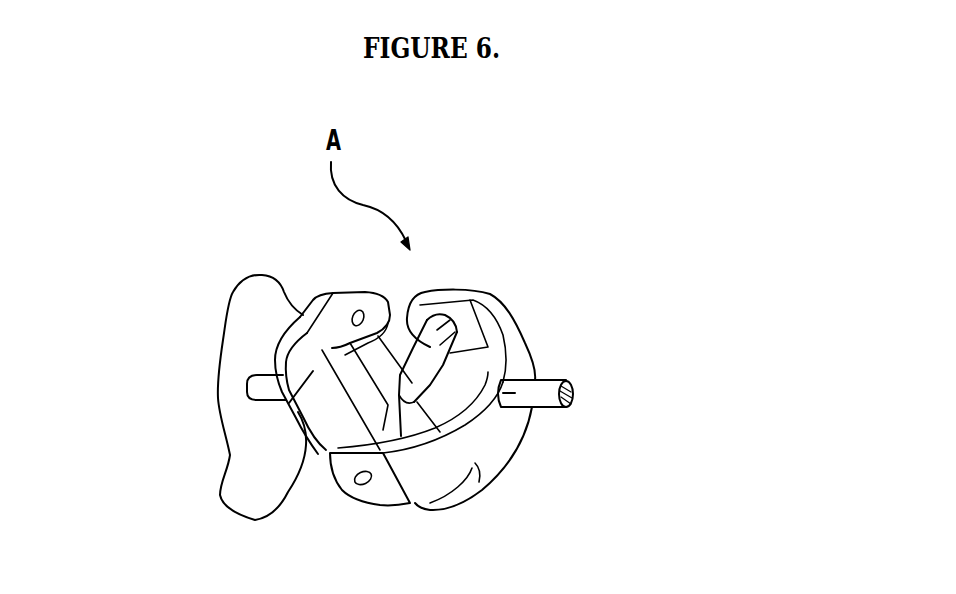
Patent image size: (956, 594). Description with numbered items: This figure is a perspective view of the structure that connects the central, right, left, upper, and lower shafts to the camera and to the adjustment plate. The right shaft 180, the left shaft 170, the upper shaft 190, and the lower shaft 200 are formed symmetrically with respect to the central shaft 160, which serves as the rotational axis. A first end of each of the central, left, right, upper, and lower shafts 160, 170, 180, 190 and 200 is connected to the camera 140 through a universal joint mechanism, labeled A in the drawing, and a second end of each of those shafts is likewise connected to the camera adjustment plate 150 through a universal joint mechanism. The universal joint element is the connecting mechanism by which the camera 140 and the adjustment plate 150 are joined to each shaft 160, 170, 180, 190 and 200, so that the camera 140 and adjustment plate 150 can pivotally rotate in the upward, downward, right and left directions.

The camera 140 is at (187, 397).
The camera adjustment plate 150 is at (220, 407).
The central shaft 160 is at (540, 400).
The left shaft 170 is at (540, 400).
The right shaft 180 is at (540, 400).
The upper shaft 190 is at (540, 400).
The lower shaft 200 is at (561, 362).